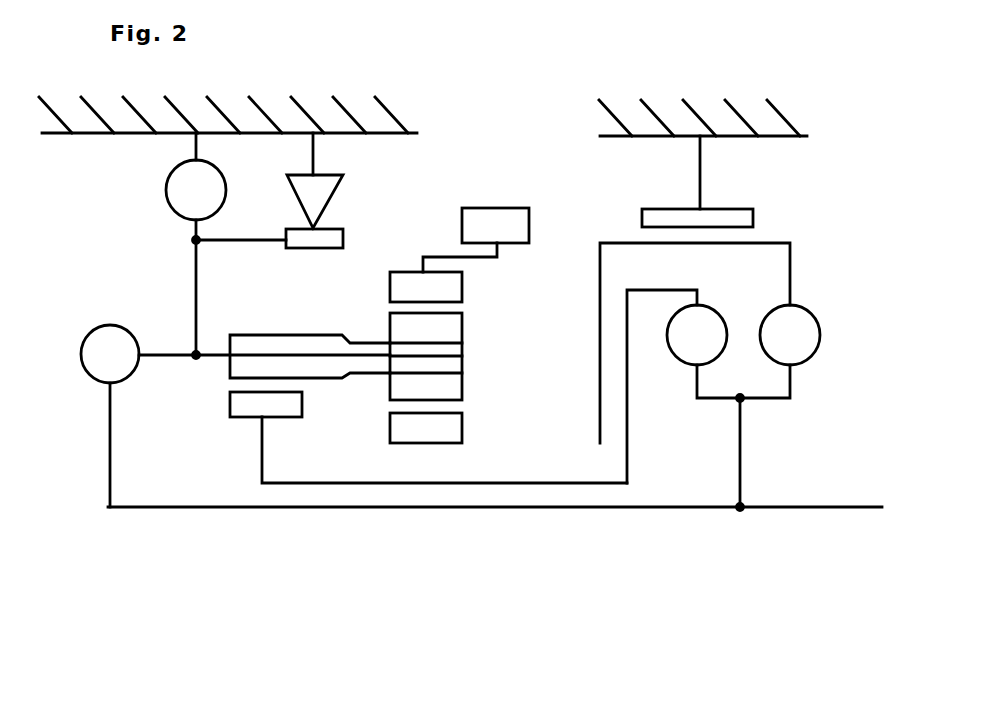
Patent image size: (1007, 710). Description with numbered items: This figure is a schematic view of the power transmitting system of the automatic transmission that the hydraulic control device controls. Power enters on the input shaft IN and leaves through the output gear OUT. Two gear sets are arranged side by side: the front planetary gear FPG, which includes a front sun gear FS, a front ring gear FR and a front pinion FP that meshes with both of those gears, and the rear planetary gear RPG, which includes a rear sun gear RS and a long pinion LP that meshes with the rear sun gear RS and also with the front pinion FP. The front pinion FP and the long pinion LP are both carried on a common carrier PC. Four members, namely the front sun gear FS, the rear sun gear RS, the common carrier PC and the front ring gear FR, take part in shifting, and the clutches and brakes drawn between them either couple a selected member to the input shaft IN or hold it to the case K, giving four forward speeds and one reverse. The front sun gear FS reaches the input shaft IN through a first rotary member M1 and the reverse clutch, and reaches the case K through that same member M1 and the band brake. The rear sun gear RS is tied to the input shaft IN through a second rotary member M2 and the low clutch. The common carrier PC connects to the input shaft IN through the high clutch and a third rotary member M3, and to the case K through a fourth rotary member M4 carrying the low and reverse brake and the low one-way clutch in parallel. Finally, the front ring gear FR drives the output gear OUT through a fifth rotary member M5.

The case K is at (417, 135).
The output gear OUT is at (497, 208).
The fifth rotary member M5 is at (480, 258).
The front ring gear FR is at (462, 292).
The front pinion FP is at (462, 388).
The front sun gear FS is at (462, 430).
The common carrier PC is at (261, 352).
The long pinion LP is at (312, 334).
The rear sun gear RS is at (288, 418).
The third rotary member M3 is at (108, 436).
The fourth rotary member M4 is at (193, 298).
The first rotary member M1 is at (792, 268).
The second rotary member M2 is at (627, 388).
The input shaft IN is at (825, 507).
The rear planetary gear RPG is at (265, 514).
The front planetary gear FPG is at (421, 513).